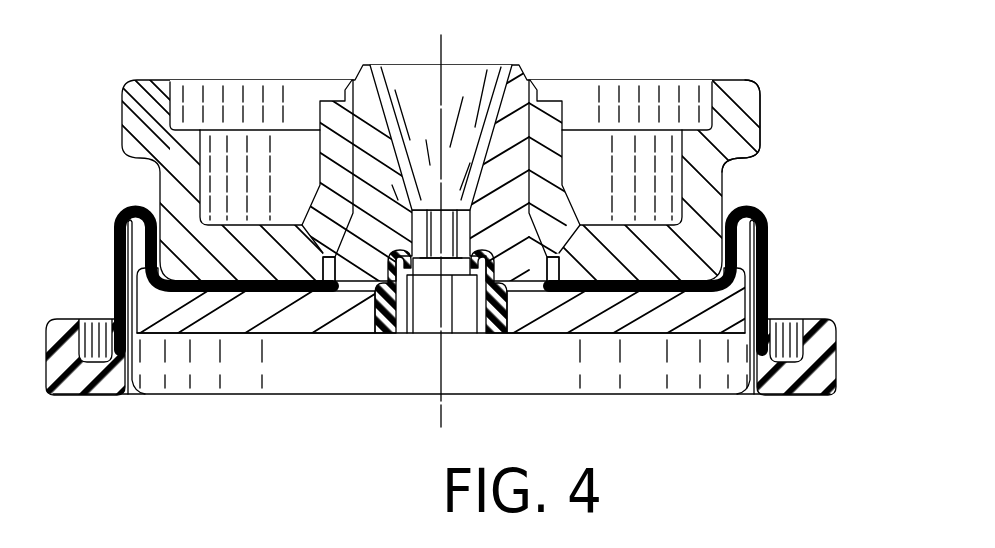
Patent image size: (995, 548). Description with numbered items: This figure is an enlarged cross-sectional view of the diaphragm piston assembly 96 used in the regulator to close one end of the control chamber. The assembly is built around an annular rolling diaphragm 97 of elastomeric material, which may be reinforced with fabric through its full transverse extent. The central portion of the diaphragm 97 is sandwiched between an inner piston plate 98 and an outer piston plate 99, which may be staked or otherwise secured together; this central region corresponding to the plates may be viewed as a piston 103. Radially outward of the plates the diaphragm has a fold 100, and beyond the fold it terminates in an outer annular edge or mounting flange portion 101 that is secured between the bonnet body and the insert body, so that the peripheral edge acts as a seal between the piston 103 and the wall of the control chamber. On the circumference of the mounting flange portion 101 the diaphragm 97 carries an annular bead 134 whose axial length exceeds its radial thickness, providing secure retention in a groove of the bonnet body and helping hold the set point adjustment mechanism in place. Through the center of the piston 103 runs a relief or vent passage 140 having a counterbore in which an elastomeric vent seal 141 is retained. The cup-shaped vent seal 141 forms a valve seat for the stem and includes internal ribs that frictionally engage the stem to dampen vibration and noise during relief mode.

The diaphragm piston assembly 96 is at (206, 50).
The vent passage 140 is at (482, 115).
The outer piston plate 99 is at (737, 90).
The rolling diaphragm 97 is at (772, 196).
The fold 100 is at (133, 203).
The annular bead 134 is at (72, 321).
The mounting flange portion 101 is at (68, 395).
The inner piston plate 98 is at (233, 323).
The vent seal 141 is at (378, 307).
The piston 103 is at (617, 345).